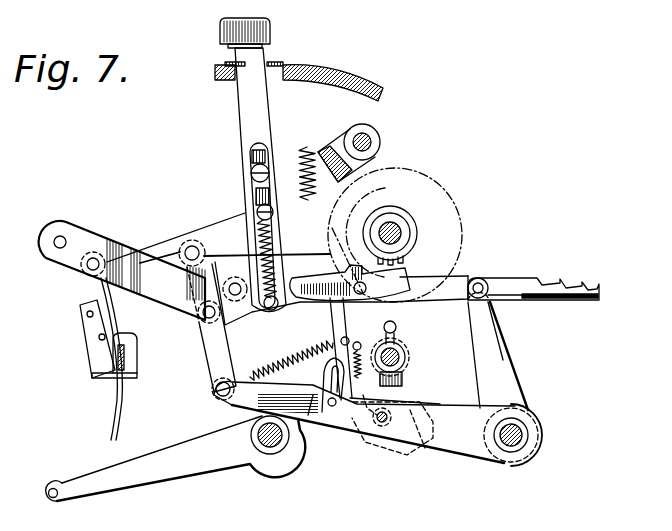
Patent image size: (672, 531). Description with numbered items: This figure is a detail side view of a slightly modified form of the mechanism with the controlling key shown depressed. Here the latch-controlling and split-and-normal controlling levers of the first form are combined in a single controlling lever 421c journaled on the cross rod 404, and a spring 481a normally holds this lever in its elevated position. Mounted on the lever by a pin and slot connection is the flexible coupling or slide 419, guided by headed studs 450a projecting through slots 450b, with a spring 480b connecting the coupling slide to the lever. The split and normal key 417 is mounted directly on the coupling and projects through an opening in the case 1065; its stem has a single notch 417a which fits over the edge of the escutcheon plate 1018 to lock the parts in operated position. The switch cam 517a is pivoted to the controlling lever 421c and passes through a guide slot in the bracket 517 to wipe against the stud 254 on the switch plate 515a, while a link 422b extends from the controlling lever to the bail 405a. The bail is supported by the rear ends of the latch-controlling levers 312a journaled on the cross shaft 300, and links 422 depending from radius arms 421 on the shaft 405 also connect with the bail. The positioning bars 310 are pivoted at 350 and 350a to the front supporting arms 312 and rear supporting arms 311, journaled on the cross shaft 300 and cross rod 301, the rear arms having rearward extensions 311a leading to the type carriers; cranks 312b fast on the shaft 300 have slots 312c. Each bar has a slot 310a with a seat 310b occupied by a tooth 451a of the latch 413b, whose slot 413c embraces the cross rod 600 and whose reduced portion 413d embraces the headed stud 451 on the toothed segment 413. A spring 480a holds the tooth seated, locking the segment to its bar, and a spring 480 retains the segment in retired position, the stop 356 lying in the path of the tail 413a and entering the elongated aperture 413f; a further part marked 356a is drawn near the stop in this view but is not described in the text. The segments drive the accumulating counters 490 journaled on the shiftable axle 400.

The split and normal key 417 is at (256, 67).
The notch 417a is at (236, 62).
The escutcheon plate 1018 is at (286, 67).
The case 1065 is at (381, 90).
The flexible coupling or slide 419 is at (240, 147).
The headed studs 450a is at (251, 174).
The slots 450b is at (285, 185).
The spring 480b is at (270, 262).
The cross rod 404 is at (372, 140).
The spring 481a is at (388, 180).
The accumulating counter 490 is at (452, 200).
The rolls or teeth 451a is at (367, 203).
The offsets or seats 310b is at (464, 188).
The axle 400 is at (398, 233).
The shaft 405 is at (61, 236).
The radius arm 421 is at (107, 242).
The link 422b is at (187, 270).
The controlling lever 421c is at (163, 241).
The link 422 is at (213, 348).
The spring 480 is at (214, 393).
The bail 405a is at (216, 403).
The pivot 350 is at (486, 280).
The pivot 350a is at (235, 283).
The slot 310a is at (305, 292).
The rear supporting arm 311 is at (260, 350).
The counter-drive member 413 is at (397, 272).
The headed stud 451 is at (400, 322).
The reduced slot portion 413d is at (400, 338).
The cross rod 600 is at (365, 352).
The slot 413c is at (405, 364).
The latch 413b is at (402, 378).
The spring 480a is at (330, 352).
The hook 356a is at (350, 412).
The stop 356 is at (400, 398).
The tail 413a is at (373, 430).
The elongated aperture 413f is at (420, 432).
The positioning bar 310 is at (508, 298).
The front supporting arm 312 is at (508, 393).
The cross shaft 300 is at (526, 434).
The crank 312b is at (484, 464).
The latch-controlling lever 312a is at (246, 427).
The slot 312c is at (308, 416).
The cross rod 301 is at (271, 452).
The rearward extension 311a is at (183, 479).
The bracket 517 is at (92, 351).
The switch or cam finger 517a is at (115, 422).
The switch plate 515a is at (128, 366).
The stud 254 is at (115, 362).